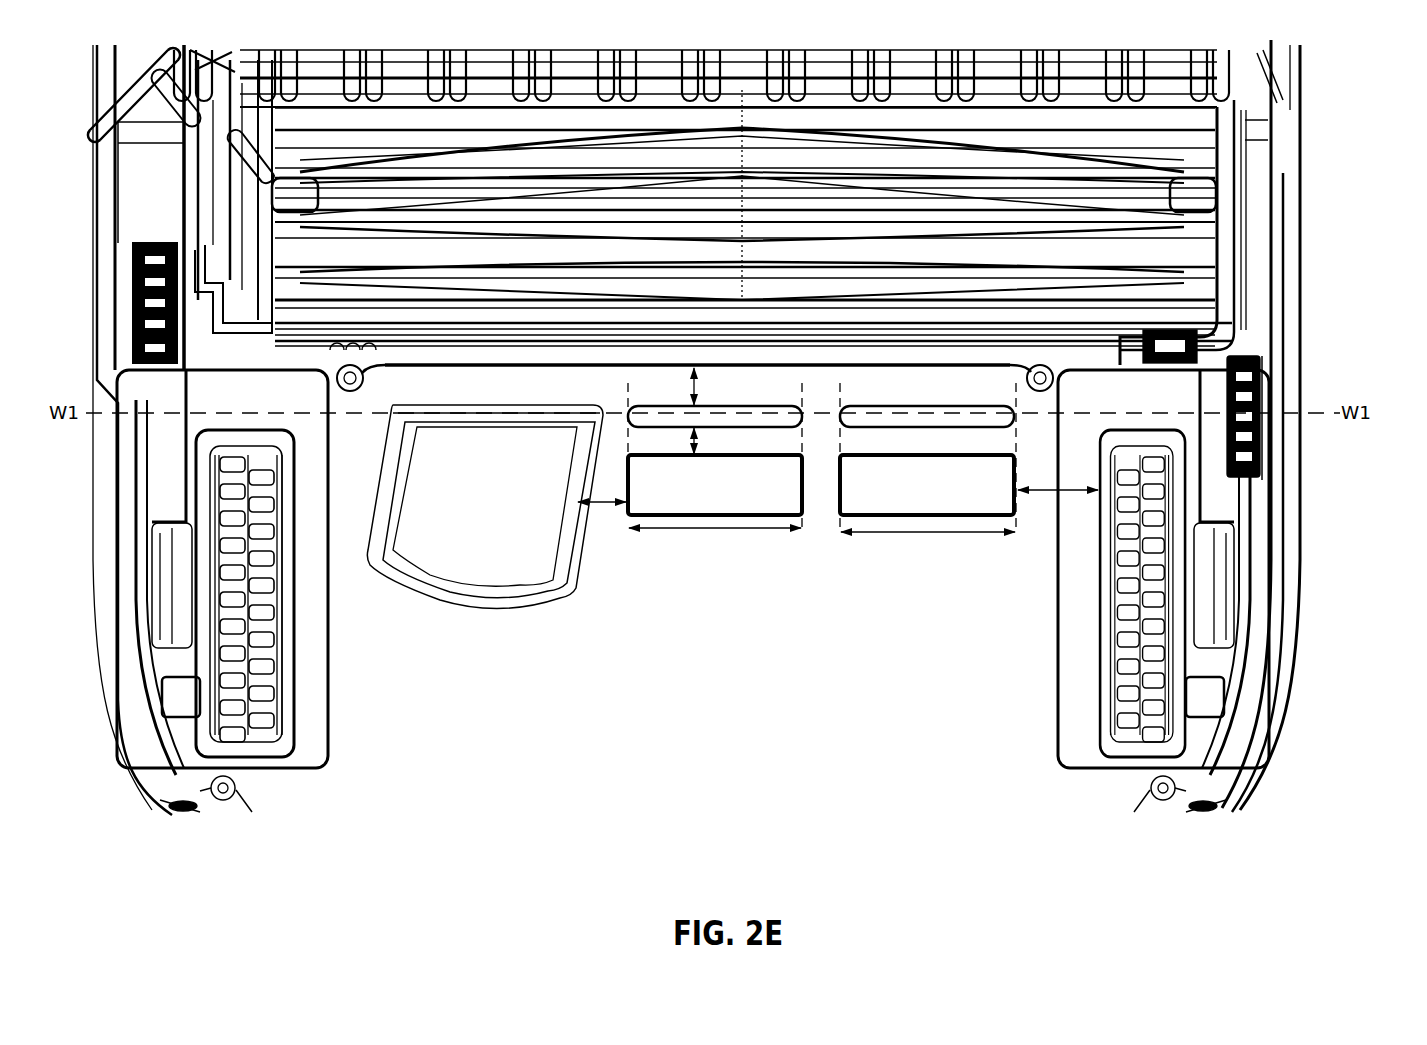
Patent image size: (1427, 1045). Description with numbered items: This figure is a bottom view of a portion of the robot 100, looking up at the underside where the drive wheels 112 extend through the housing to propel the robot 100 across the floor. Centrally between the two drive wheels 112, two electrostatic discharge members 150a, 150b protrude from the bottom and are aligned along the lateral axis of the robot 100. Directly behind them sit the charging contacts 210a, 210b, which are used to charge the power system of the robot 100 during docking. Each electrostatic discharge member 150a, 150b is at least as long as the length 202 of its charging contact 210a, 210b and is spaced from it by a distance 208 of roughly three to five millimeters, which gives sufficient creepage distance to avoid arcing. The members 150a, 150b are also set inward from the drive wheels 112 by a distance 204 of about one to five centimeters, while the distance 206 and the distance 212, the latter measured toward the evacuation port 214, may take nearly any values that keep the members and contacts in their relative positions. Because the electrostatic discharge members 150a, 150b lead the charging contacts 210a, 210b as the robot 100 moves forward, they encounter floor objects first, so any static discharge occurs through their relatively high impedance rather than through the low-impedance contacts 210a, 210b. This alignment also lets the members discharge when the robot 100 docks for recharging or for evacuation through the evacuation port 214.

The robot 100 is at (1368, 124).
The drive wheels 112 is at (296, 648).
The electrostatic discharge member 150a is at (799, 405).
The electrostatic discharge member 150b is at (960, 405).
The length of charging contact 202 is at (752, 533).
The distance from drive wheels 204 is at (1040, 492).
The distance 206 is at (690, 392).
The distance from charging contacts 208 is at (690, 443).
The charging contact 210a is at (715, 485).
The charging contact 210b is at (927, 485).
The distance 212 is at (607, 507).
The evacuation port 214 is at (395, 480).